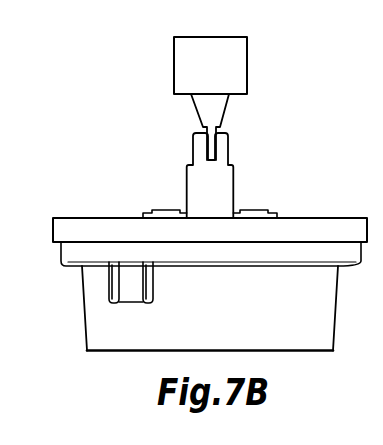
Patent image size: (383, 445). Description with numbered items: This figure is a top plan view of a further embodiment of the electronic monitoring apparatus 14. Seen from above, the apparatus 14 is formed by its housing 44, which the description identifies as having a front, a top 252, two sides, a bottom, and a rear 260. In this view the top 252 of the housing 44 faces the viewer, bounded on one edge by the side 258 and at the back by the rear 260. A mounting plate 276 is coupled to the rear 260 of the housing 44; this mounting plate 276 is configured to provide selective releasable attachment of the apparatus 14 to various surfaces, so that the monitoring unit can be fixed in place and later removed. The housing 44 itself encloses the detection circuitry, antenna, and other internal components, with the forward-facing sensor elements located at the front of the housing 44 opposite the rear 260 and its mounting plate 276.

The electronic monitoring apparatus 14 is at (322, 179).
The mounting plate 276 is at (234, 171).
The rear 260 is at (101, 218).
The top 252 is at (225, 318).
The side 258 is at (84, 306).
The housing 44 is at (334, 313).